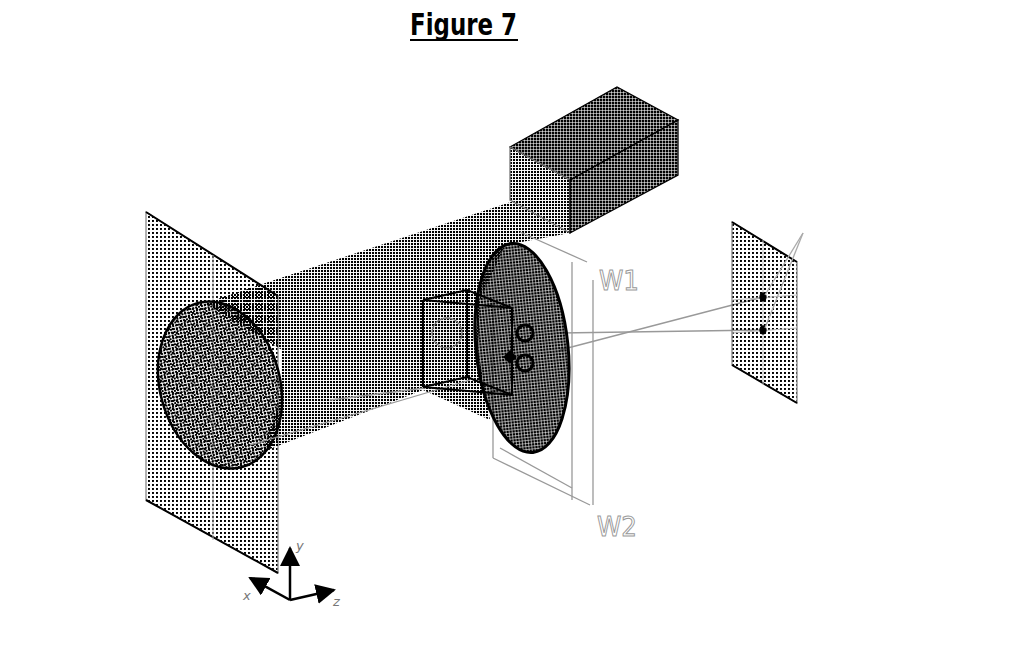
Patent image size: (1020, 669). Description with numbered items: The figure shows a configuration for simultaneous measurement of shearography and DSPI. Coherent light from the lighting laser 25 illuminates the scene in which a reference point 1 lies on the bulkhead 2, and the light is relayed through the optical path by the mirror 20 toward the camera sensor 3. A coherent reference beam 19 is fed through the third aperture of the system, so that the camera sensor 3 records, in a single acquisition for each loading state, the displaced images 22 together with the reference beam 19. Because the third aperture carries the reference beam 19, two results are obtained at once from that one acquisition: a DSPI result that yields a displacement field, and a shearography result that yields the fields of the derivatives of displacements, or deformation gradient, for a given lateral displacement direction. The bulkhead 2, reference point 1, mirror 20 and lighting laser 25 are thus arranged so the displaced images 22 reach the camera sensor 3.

The reference point 1 is at (208, 400).
The bulkhead 2 is at (212, 394).
The camera sensor 3 is at (764, 319).
The reference beam 19 is at (453, 320).
The mirror 20 is at (462, 290).
The displaced images 22 is at (803, 232).
The lighting laser 25 is at (593, 160).